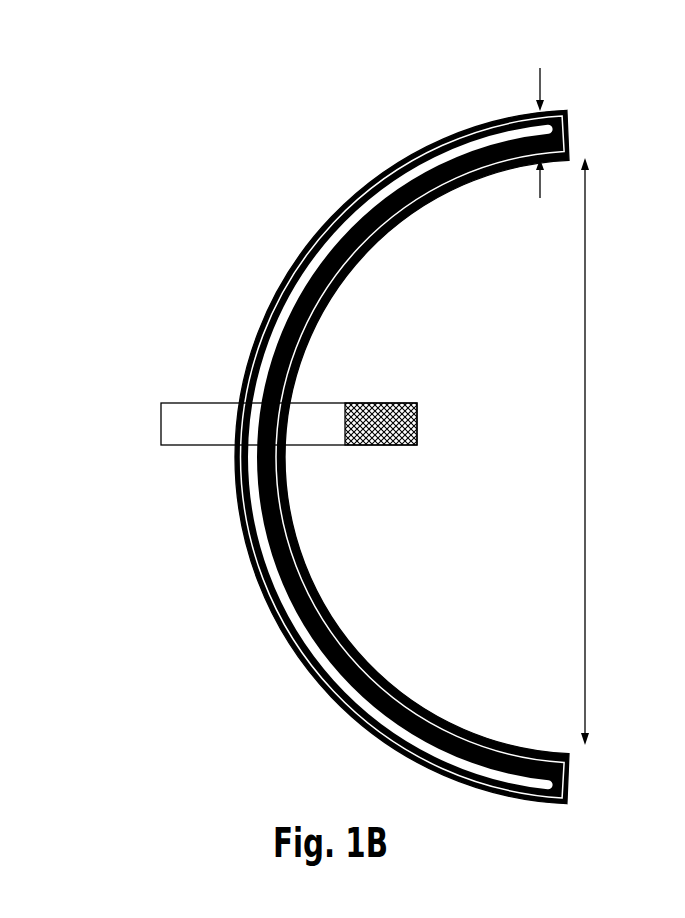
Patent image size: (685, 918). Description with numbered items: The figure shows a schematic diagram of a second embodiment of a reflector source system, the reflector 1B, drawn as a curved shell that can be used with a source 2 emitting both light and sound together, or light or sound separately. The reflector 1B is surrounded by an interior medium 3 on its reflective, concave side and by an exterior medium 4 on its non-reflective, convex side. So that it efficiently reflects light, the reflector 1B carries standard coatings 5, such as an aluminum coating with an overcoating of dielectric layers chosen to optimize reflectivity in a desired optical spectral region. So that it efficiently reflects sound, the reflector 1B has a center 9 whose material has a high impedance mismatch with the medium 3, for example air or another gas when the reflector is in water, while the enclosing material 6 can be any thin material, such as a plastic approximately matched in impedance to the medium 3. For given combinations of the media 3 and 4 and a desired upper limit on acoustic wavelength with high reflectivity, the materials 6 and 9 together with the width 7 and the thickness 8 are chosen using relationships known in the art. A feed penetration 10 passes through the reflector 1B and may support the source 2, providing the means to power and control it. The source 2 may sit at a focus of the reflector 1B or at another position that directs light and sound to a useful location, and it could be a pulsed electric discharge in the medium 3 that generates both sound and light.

The reflector 1B is at (319, 433).
The source 2 is at (392, 452).
The interior medium 3 is at (435, 333).
The exterior medium 4 is at (209, 195).
The coatings 5 is at (336, 603).
The material 6 is at (298, 668).
The width 7 is at (590, 451).
The thickness 8 is at (565, 116).
The center 9 is at (286, 621).
The feed penetration 10 is at (178, 452).